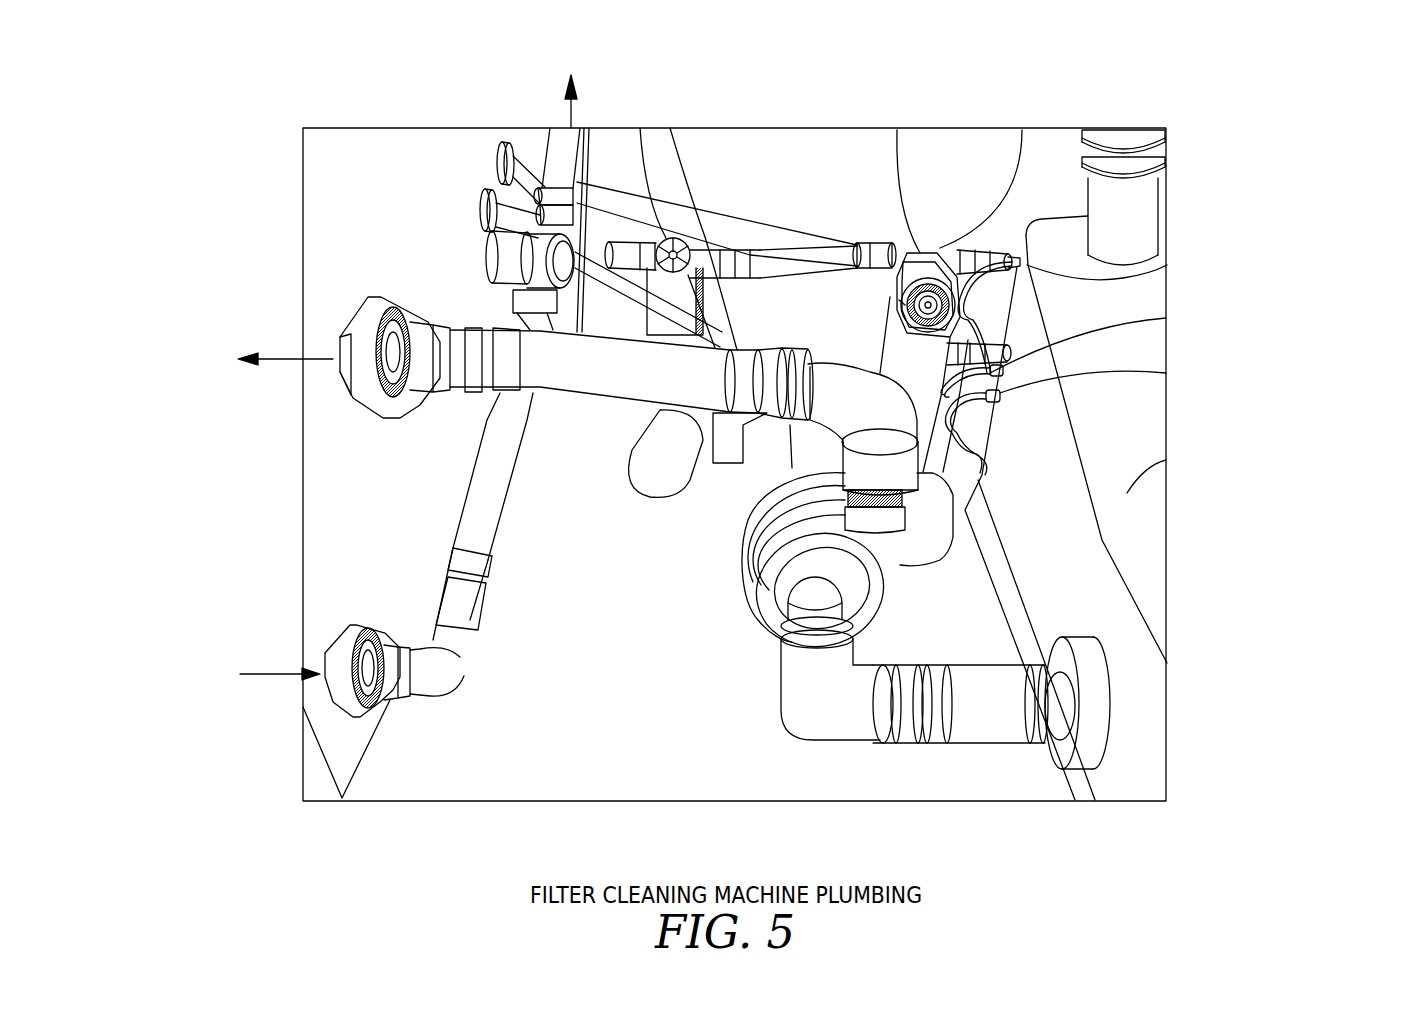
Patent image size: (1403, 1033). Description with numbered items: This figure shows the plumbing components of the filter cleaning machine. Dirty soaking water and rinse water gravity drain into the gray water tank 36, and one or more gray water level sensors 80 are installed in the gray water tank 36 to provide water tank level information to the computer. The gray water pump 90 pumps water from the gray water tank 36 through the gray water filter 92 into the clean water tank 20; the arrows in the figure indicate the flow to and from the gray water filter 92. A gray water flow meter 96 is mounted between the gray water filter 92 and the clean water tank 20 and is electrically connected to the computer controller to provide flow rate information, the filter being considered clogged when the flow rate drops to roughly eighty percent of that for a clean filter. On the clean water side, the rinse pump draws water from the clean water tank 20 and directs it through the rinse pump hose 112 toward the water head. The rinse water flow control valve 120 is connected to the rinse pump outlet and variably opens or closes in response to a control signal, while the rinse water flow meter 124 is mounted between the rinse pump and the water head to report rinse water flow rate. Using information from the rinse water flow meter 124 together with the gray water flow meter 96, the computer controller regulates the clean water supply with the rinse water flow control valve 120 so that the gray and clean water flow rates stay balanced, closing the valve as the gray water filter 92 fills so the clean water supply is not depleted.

The clean water tank 20 is at (569, 99).
The rinse water flow meter 124 is at (640, 128).
The rinse water flow control valve 120 is at (897, 130).
The rinse pump hose 112 is at (1022, 130).
The gray water level sensors 80 is at (1100, 280).
The gray water tank 36 is at (1127, 493).
The gray water flow meter 96 is at (492, 253).
The gray water filter 92 is at (273, 358).
The gray water pump 90 is at (770, 597).